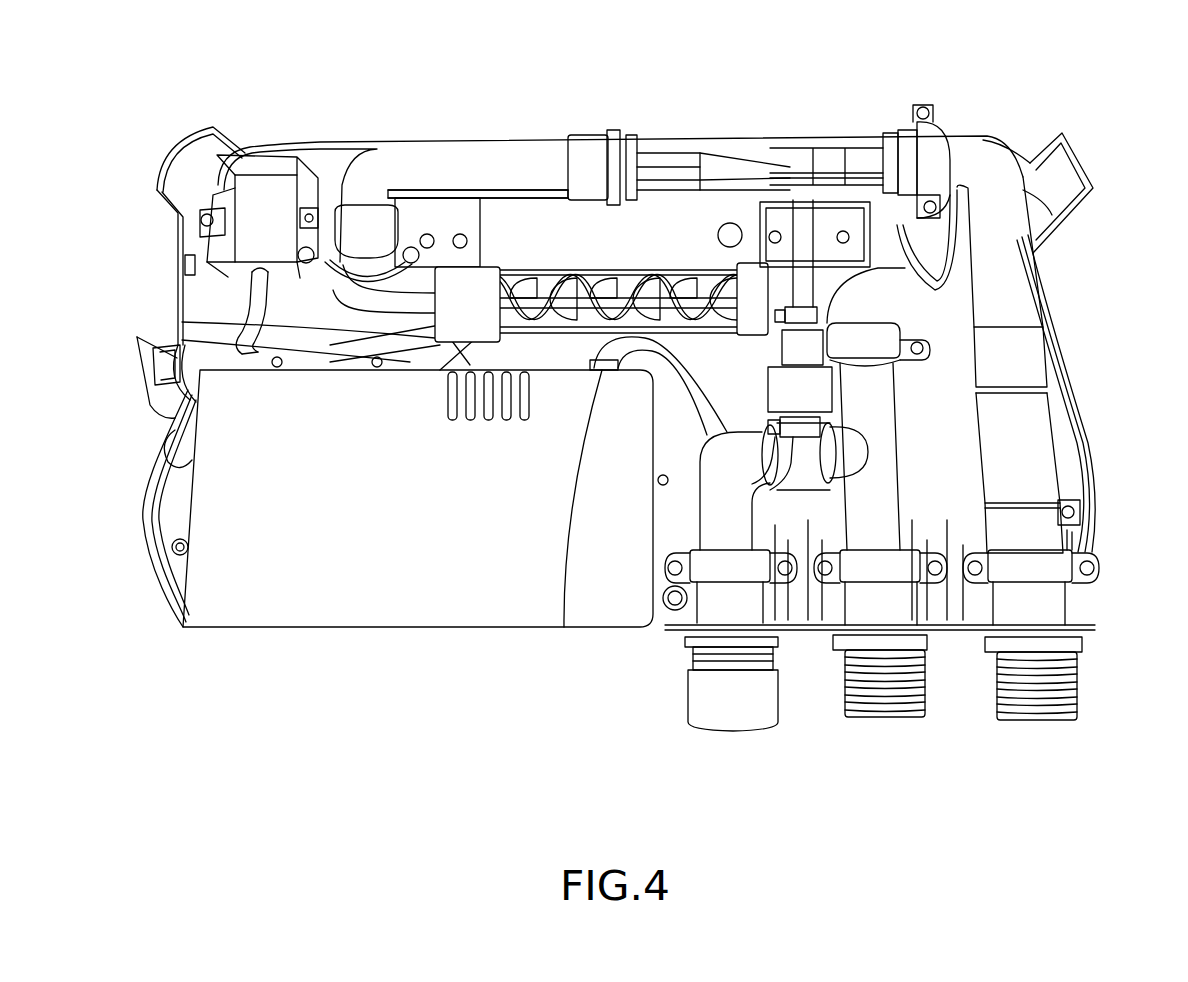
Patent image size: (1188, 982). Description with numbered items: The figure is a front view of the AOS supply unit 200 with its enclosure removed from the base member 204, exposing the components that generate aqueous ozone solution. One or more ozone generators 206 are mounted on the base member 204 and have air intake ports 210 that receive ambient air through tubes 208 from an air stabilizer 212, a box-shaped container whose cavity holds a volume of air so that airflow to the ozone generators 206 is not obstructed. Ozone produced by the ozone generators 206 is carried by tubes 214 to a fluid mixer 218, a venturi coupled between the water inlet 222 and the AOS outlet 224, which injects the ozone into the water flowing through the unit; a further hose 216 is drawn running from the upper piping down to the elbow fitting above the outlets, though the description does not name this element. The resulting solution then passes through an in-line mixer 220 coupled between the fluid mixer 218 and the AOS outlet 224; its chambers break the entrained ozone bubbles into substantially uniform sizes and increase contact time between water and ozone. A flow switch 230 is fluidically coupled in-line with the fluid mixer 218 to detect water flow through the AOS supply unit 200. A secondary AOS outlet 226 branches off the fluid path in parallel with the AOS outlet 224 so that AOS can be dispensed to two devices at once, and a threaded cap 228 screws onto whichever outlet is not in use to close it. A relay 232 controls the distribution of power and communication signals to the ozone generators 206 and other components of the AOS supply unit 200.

The AOS supply unit 200 is at (200, 58).
The base member 204 is at (335, 143).
The ozone generators 206 is at (382, 610).
The tubes 208 is at (257, 293).
The air intake ports 210 is at (337, 320).
The air stabilizer 212 is at (257, 215).
The tubes 214 is at (564, 628).
The conduit 216 is at (667, 355).
The fluid mixer 218 is at (830, 152).
The in-line mixer 220 is at (526, 268).
The water inlet 222 is at (1040, 718).
The AOS outlet 224 is at (890, 715).
The secondary AOS outlet 226 is at (693, 650).
The cap 228 is at (730, 735).
The flow switch 230 is at (1038, 447).
The relay 232 is at (180, 392).